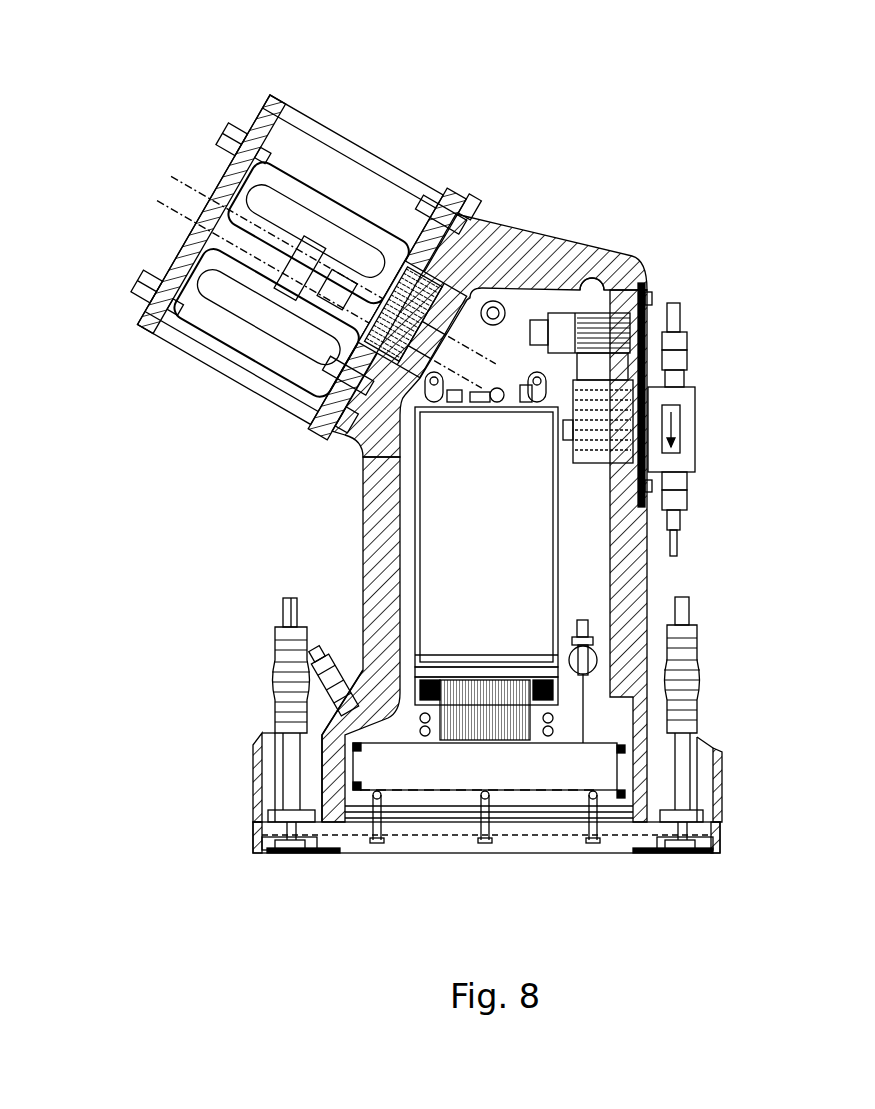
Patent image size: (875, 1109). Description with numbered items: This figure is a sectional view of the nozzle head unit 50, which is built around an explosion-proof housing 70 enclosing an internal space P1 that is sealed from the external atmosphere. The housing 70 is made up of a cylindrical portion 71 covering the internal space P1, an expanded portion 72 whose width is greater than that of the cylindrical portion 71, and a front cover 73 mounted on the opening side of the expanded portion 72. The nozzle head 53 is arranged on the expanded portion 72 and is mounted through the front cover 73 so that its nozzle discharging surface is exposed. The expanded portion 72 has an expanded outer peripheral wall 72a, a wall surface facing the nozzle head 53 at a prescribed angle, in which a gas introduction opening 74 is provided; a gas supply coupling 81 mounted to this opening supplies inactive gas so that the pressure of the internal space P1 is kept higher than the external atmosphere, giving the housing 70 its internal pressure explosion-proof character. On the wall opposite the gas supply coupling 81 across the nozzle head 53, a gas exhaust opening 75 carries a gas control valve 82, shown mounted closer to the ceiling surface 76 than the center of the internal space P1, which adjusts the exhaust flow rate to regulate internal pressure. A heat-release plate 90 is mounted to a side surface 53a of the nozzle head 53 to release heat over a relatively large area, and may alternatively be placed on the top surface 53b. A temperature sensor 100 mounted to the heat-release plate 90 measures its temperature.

The nozzle head unit 50 is at (627, 195).
The explosion-proof housing 70 is at (560, 232).
The cylindrical portion 71 is at (647, 563).
The expanded portion 72 is at (350, 762).
The expanded outer peripheral wall 72a is at (357, 678).
The front cover 73 is at (567, 842).
The gas introduction opening 74 is at (275, 700).
The gas exhaust opening 75 is at (622, 450).
The ceiling surface 76 is at (586, 297).
The gas supply coupling 81 is at (275, 677).
The gas control valve 82 is at (687, 398).
The heat-release plate 90 is at (597, 773).
The temperature sensor 100 is at (347, 667).
The nozzle head 53 is at (408, 804).
The side surface 53a is at (452, 793).
The top surface 53b is at (650, 715).
The internal space P1 is at (447, 523).